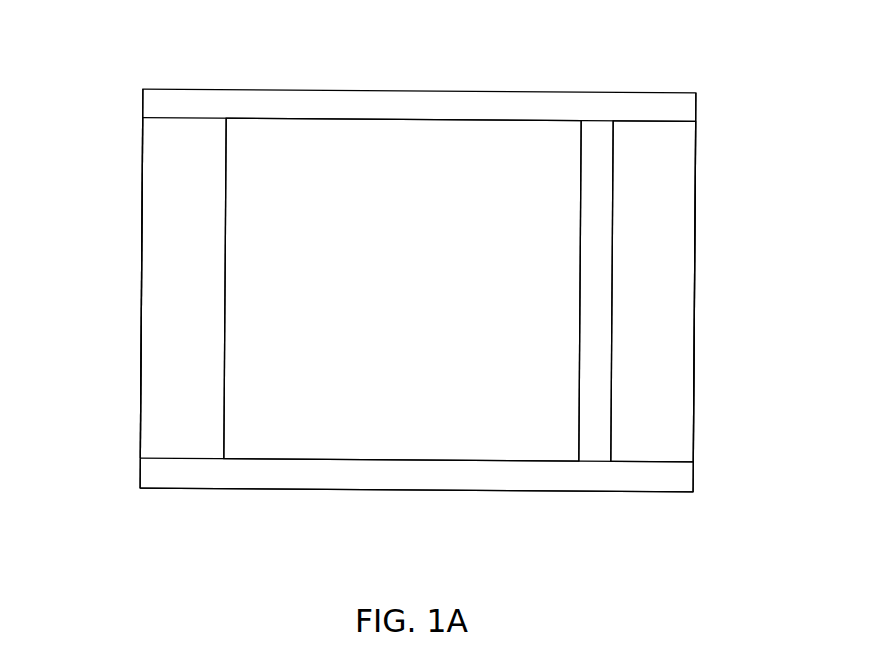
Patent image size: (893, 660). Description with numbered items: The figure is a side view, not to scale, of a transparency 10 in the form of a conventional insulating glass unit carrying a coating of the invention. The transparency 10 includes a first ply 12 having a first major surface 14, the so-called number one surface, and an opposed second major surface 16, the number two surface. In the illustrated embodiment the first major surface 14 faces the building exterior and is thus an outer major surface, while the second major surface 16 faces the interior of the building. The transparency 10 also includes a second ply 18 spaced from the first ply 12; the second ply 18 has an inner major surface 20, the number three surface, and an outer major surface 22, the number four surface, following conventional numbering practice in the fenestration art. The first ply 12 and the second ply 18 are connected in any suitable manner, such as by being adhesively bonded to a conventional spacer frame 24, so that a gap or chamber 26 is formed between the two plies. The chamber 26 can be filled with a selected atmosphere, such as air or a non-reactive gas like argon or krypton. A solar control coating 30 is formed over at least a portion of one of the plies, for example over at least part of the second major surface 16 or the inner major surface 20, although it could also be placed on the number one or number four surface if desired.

The transparency 10 is at (680, 62).
The first ply 12 is at (650, 445).
The first major surface 14 is at (695, 330).
The second major surface 16 is at (604, 440).
The second ply 18 is at (177, 143).
The inner major surface 20 is at (232, 152).
The outer major surface 22 is at (143, 160).
The spacer frame 24 is at (205, 473).
The chamber 26 is at (412, 294).
The solar control coating 30 is at (592, 137).